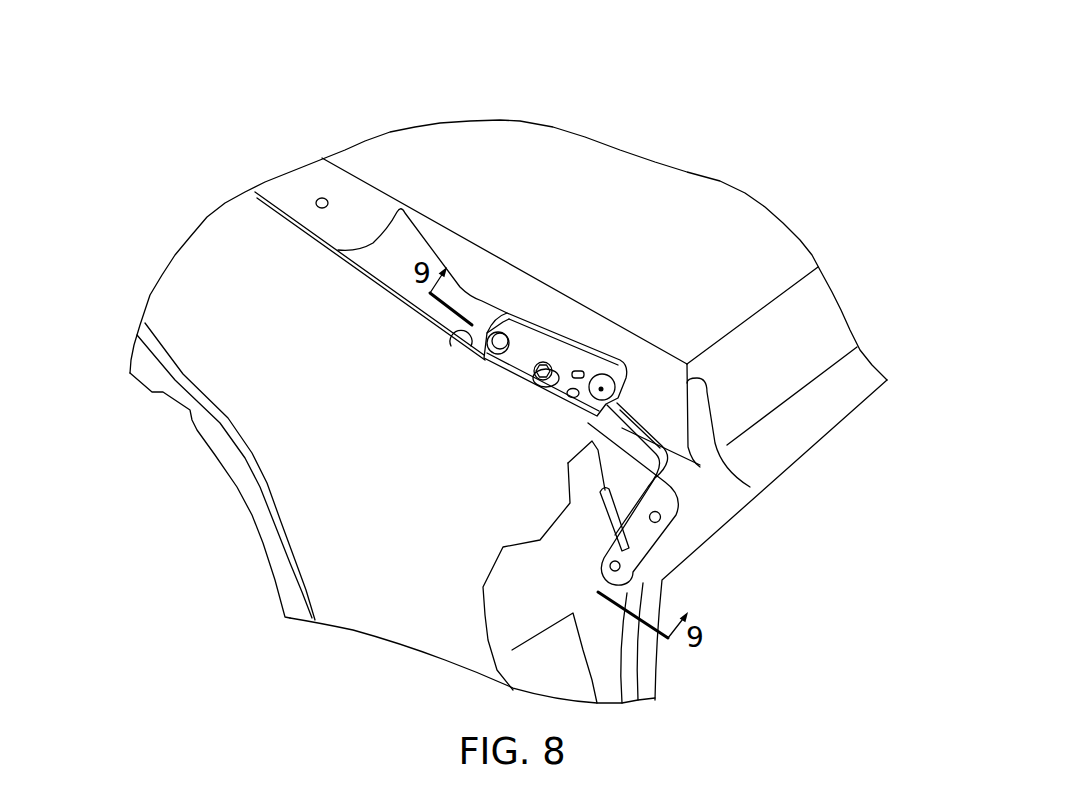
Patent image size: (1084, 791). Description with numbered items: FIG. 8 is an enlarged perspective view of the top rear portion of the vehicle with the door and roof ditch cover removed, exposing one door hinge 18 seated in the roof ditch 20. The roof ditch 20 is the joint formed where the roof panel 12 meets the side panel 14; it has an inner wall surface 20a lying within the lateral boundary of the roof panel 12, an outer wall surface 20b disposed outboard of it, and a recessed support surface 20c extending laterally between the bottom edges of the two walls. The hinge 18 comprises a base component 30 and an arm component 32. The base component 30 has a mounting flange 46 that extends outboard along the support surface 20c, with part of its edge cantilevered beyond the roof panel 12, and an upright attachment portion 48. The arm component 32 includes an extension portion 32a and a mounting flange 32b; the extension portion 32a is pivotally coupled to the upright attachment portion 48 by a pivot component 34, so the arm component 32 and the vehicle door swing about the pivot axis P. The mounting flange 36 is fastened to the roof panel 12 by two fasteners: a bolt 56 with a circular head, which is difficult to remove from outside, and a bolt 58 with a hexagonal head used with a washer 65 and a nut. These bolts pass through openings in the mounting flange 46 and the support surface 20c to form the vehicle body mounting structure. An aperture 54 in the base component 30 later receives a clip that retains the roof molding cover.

The roof panel 12 is at (703, 207).
The side panel 14 is at (197, 300).
The hinge 18 is at (705, 491).
The roof ditch 20 is at (660, 405).
The inner wall surface 20a is at (646, 378).
The outer wall surface 20b is at (462, 343).
The recessed support surface 20c is at (445, 322).
The base component 30 is at (527, 331).
The arm component 32 is at (658, 556).
The extension portion 32a is at (643, 452).
The mounting flange 32b is at (627, 543).
The pivot component 34 is at (572, 421).
The mounting flange 36 is at (662, 519).
The mounting flange 46 is at (503, 332).
The upright attachment portion 48 is at (553, 330).
The aperture 54 is at (572, 388).
The bolt 56 is at (496, 350).
The bolt 58 is at (535, 367).
The washer 65 is at (548, 419).
The pivot axis P is at (601, 388).